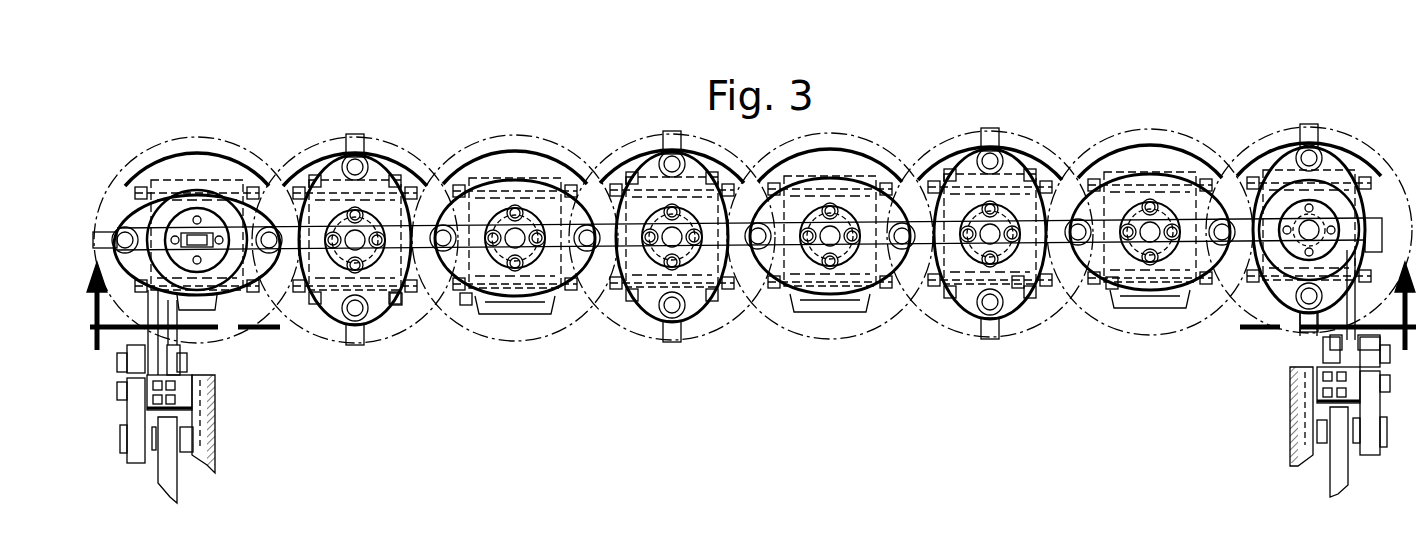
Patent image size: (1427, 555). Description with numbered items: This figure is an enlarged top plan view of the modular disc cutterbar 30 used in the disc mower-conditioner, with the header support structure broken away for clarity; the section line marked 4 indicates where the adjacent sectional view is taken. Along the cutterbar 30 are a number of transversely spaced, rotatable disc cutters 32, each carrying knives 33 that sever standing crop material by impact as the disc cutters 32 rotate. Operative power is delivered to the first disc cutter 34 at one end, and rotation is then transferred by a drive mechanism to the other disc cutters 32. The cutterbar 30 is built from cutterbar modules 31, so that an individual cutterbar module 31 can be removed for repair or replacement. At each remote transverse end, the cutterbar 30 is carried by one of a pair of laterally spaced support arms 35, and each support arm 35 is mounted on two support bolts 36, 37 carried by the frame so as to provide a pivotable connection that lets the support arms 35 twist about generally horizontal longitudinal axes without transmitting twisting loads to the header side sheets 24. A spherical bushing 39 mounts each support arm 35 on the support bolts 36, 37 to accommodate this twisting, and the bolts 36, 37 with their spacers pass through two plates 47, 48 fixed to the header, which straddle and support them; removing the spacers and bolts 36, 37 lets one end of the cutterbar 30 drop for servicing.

The disc cutterbar 30 is at (301, 114).
The first disc cutter 34 is at (192, 187).
The knives 33 is at (428, 230).
The disc cutters 32 is at (642, 160).
The cutterbar module 31 is at (396, 303).
The section line 4- 4 is at (751, 327).
The support arms 35 is at (163, 323).
The support bolt 37 is at (115, 393).
The support bolt 36 is at (188, 332).
The spherical bushing 39 is at (160, 365).
The header side sheets 24 is at (215, 462).
The plate 48 is at (138, 462).
The plate 47 is at (1328, 343).